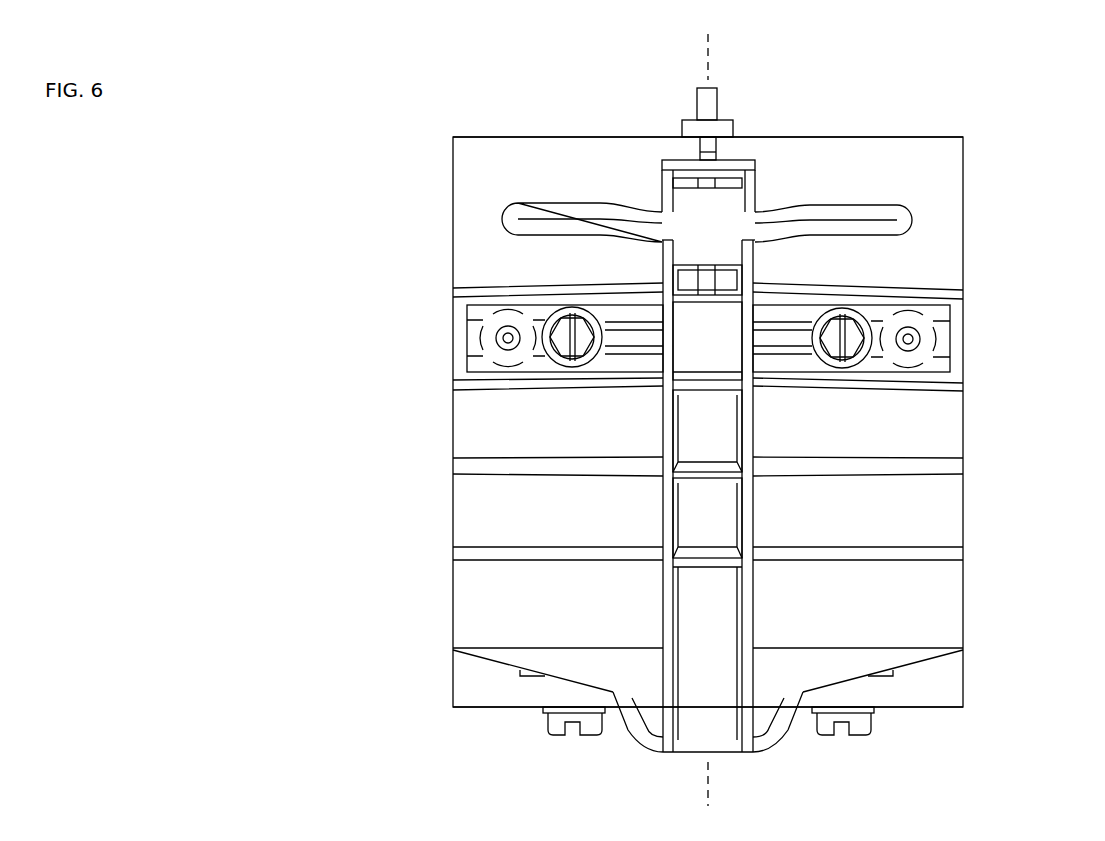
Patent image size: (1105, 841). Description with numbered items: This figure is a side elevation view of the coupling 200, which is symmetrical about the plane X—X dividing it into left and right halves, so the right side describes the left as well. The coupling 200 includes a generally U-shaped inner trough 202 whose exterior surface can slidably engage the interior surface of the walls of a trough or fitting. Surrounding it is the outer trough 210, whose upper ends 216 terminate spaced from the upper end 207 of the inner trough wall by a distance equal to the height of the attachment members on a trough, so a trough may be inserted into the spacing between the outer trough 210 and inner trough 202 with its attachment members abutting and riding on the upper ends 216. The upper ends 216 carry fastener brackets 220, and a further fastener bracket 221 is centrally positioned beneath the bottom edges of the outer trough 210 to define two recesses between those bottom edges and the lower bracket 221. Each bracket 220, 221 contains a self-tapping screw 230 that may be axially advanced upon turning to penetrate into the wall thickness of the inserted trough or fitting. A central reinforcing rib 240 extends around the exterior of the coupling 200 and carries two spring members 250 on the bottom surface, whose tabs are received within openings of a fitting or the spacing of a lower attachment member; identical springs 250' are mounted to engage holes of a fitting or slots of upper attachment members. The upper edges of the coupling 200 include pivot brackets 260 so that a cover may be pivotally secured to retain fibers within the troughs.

The coupling 200 is at (888, 84).
The inner trough 202 is at (945, 203).
The upper end of the inner trough wall 207 is at (507, 135).
The outer trough 210 is at (947, 422).
The upper ends of the outer trough wall 216 is at (935, 295).
The fastener bracket 220 is at (497, 383).
The fastener bracket 221 is at (951, 680).
The self-tapping screw 230 is at (571, 352).
The central reinforcing rib 240 is at (672, 502).
The spring member 250 is at (728, 764).
The spring 250' is at (707, 194).
The pivot bracket 260 is at (710, 107).